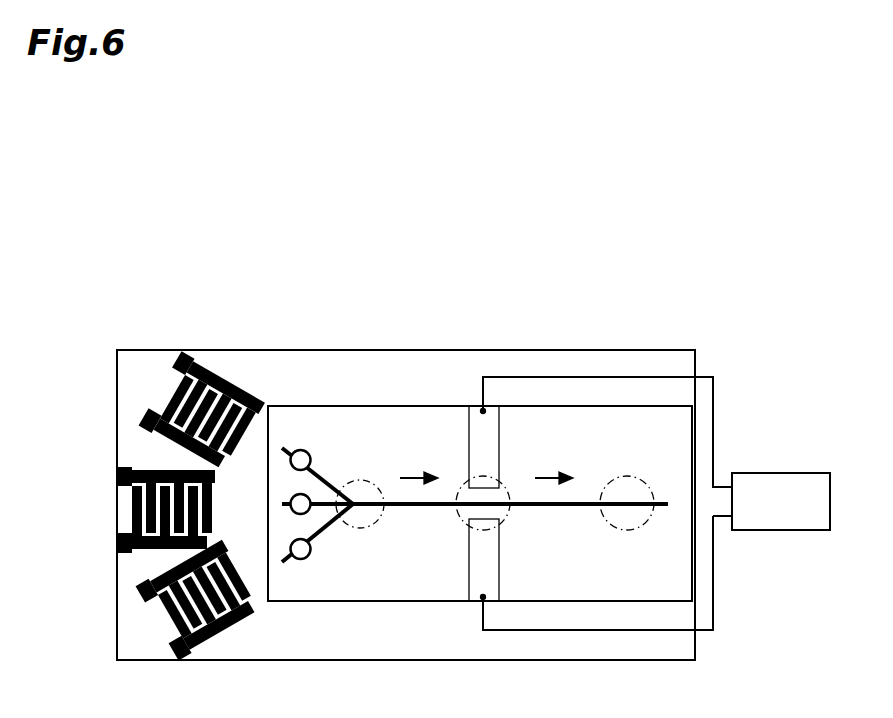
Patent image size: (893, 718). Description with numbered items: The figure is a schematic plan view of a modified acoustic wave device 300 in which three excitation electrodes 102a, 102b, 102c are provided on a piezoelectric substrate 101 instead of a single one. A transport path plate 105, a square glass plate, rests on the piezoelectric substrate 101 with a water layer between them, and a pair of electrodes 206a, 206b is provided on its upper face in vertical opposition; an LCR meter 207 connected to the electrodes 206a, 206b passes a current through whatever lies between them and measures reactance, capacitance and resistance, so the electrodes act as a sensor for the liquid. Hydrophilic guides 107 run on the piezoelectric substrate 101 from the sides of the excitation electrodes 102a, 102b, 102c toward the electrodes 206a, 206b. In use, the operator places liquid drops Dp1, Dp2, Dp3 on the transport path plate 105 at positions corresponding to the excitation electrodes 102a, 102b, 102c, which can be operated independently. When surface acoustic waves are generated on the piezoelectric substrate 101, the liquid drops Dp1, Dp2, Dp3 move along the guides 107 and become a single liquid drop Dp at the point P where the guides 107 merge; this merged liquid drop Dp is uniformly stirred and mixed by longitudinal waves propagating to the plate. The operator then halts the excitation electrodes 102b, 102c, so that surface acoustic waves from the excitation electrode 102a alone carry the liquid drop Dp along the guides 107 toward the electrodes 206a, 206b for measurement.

The piezoelectric substrate 101 is at (280, 350).
The transport path plate 105 is at (423, 406).
The excitation electrode 102a is at (126, 464).
The excitation electrode 102b is at (247, 623).
The excitation electrode 102c is at (243, 382).
The guides 107 is at (554, 508).
The liquid drop Dp1 is at (292, 496).
The liquid drop Dp2 is at (307, 558).
The liquid drop Dp3 is at (307, 452).
The liquid drop Dp is at (355, 528).
The point P is at (364, 497).
The electrode 206a is at (500, 428).
The electrode 206b is at (500, 586).
The acoustic wave device 300 is at (468, 334).
The LCR meter 207 is at (798, 473).